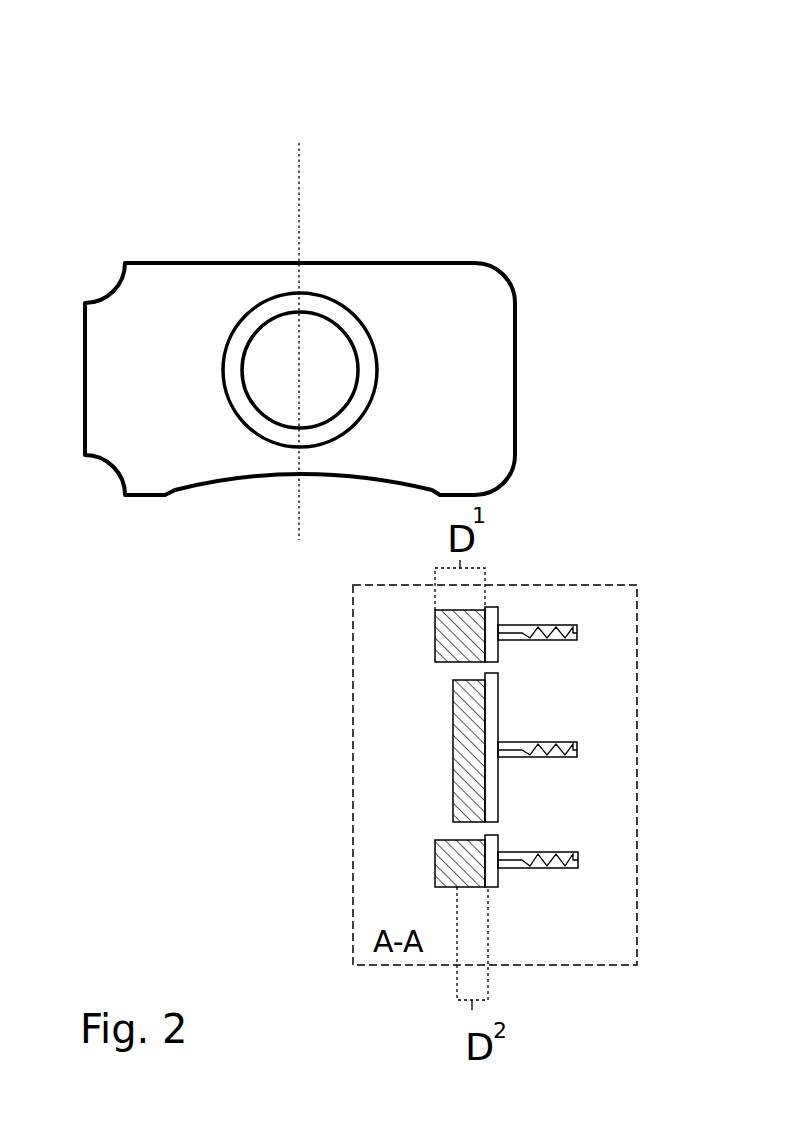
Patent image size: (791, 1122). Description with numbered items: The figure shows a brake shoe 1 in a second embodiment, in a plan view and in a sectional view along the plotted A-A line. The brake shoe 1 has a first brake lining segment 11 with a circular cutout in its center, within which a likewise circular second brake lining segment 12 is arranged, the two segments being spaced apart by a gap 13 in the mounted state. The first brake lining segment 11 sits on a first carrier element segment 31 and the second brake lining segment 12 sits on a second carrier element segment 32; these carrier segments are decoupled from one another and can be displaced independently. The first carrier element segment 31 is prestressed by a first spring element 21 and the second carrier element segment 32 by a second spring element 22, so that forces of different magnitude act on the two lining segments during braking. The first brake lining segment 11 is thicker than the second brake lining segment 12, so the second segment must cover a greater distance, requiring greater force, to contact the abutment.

The brake shoe 1 is at (430, 126).
The first brake lining segment 11 is at (418, 290).
The second brake lining segment 12 is at (282, 368).
The gap 13 is at (263, 425).
The first spring element 21 is at (562, 625).
The second spring element 22 is at (577, 748).
The first carrier element segment 31 is at (492, 630).
The second carrier element segment 32 is at (492, 713).